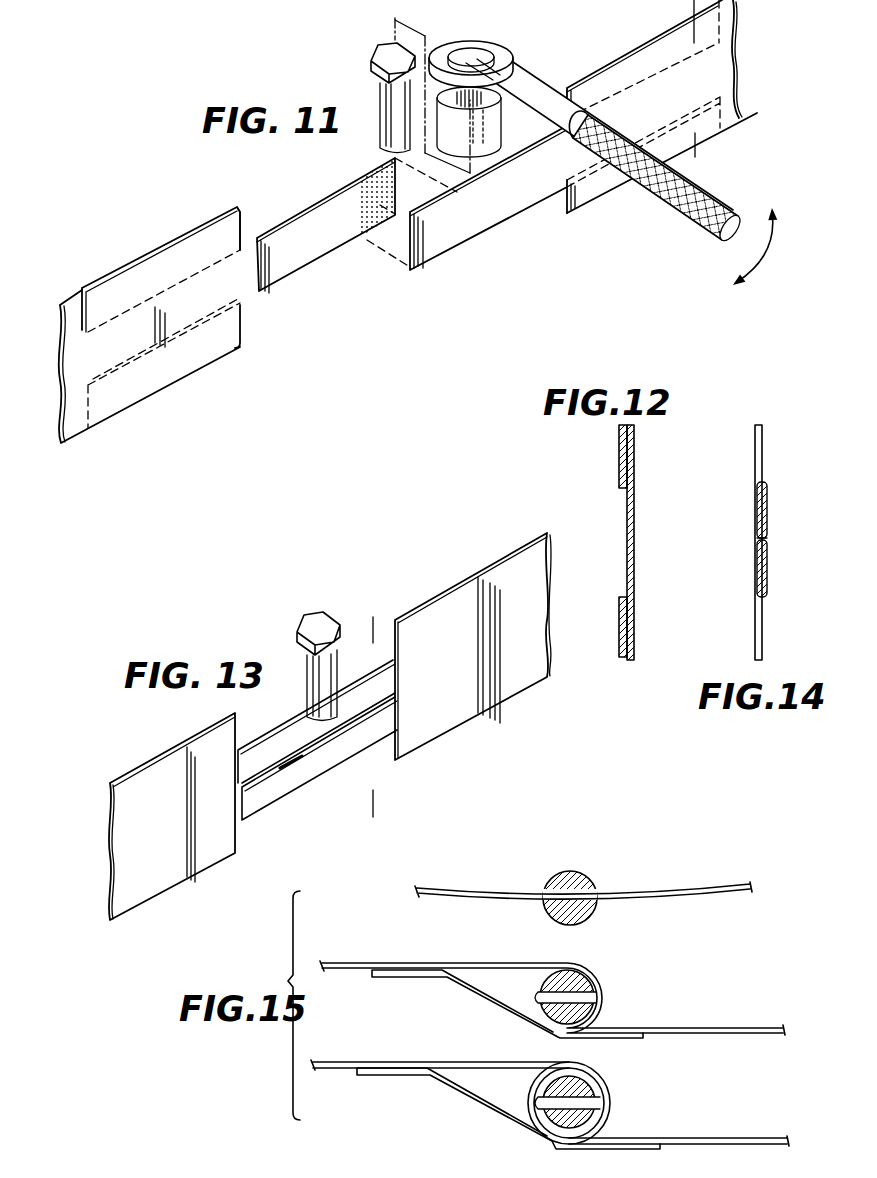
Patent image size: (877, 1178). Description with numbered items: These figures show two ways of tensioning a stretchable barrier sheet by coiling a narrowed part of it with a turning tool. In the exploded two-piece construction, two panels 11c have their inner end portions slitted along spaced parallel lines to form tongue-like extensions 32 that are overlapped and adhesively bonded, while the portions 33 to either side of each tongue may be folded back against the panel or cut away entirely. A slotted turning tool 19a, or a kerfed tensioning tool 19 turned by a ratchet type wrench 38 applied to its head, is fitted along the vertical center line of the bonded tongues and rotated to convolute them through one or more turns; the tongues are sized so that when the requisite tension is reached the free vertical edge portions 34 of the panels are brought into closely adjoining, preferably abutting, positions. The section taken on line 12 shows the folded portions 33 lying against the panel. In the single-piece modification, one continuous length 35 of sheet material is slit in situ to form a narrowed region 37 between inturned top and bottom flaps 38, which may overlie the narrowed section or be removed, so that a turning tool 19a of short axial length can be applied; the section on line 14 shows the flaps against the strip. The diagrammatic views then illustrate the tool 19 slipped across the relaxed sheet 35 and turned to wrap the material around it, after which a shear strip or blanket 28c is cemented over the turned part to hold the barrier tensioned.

In FIG. 11, the panel 11c is at (87, 362).
In FIG. 12, the panel 11c is at (627, 533).
In FIG. 11, the section line 12— 12 is at (684, 7).
In FIG. 13, the section line 14— 14 is at (367, 620).
In FIG. 15, the tensioning tool 19 is at (572, 881).
In FIG. 11, the slotted turning tool 19a is at (370, 72).
In FIG. 13, the slotted turning tool 19a is at (330, 613).
In FIG. 15, the shear strip or blanket 28c is at (483, 997).
In FIG. 11, the tongue-like extension 32 is at (285, 243).
In FIG. 11, the slitted panel portion 33 is at (128, 262).
In FIG. 12, the slitted panel portion 33 is at (623, 460).
In FIG. 11, the vertically extending edge portion 34 is at (242, 218).
In FIG. 14, the single length of stretchable sheet material 35 is at (772, 447).
In FIG. 13, the single length of stretchable sheet material 35 is at (140, 830).
In FIG. 15, the single length of stretchable sheet material 35 is at (470, 966).
In FIG. 14, the narrowed region 37 is at (758, 527).
In FIG. 13, the narrowed region 37 is at (368, 713).
In FIG. 11, the ratchet type wrench / inturned flap 38 is at (519, 90).
In FIG. 14, the ratchet type wrench / inturned flap 38 is at (766, 512).
In FIG. 13, the ratchet type wrench / inturned flap 38 is at (272, 733).